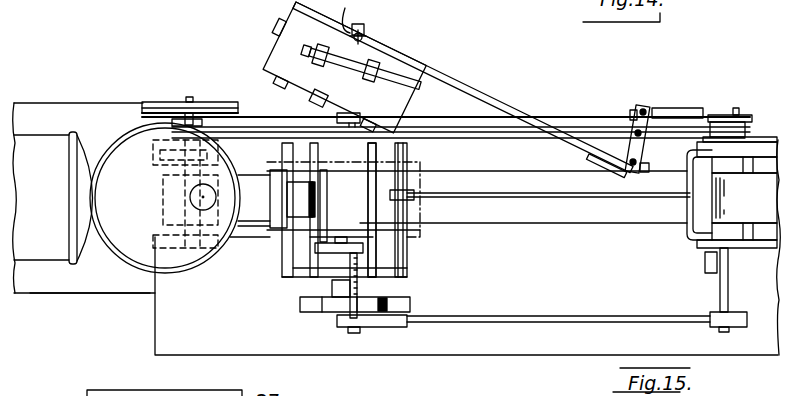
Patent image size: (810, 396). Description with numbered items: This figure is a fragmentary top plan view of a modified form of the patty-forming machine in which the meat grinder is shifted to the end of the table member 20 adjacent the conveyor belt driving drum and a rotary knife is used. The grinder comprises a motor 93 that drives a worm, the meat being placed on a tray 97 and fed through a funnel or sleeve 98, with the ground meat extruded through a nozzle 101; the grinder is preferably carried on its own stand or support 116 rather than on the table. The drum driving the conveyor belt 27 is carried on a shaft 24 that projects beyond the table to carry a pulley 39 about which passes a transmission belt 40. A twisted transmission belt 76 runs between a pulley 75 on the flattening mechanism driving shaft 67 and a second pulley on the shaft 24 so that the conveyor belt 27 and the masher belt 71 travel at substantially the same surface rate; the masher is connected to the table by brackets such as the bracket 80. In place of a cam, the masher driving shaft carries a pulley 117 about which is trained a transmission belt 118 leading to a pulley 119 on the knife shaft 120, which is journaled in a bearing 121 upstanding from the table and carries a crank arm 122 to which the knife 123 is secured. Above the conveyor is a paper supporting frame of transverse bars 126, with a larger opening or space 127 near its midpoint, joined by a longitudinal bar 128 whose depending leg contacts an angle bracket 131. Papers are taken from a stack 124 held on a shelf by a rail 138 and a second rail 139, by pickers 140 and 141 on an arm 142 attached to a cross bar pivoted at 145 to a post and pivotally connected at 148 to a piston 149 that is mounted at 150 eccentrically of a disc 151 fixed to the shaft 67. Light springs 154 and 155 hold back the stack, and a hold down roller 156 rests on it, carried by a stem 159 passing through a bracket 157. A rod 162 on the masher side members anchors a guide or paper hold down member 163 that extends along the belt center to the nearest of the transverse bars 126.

The table member 20 is at (510, 357).
The motor 93 is at (52, 125).
The stand or support 116 is at (68, 288).
The tray 97 is at (122, 148).
The funnel or sleeve 98 is at (192, 203).
The pulley 39 is at (213, 102).
The shaft 24 is at (187, 97).
The transmission belt 40 is at (253, 110).
The transmission belt 76 is at (572, 126).
The arm 142 is at (500, 112).
The rail 138 is at (425, 54).
The stack of papers 124 is at (422, 70).
The second rail 139 is at (272, 28).
The light spring 154 is at (300, 70).
The light spring 155 is at (372, 128).
The picker 140 is at (328, 50).
The picker 141 is at (374, 72).
The bracket 157 is at (364, 28).
The stem 159 is at (380, 34).
The hold down roller 156 is at (347, 0).
The nozzle 101 is at (297, 200).
The transverse bars 126 is at (395, 257).
The longitudinal bar 128 is at (390, 272).
The conveyor belt 27 is at (556, 223).
The opening or space 127 is at (357, 155).
The knife 123 is at (328, 193).
The crank arm 122 is at (348, 243).
The knife shaft 120 is at (363, 296).
The angle bracket 131 is at (334, 293).
The bearing 121 is at (410, 305).
The transmission belt 118 is at (540, 318).
The pulley 119 is at (366, 334).
The guide or paper hold down member 163 is at (488, 198).
The pivot 145 is at (633, 124).
The pivotal connection 148 is at (640, 104).
The piston 149 is at (697, 97).
The eccentric mounting 150 is at (736, 106).
The disc 151 is at (762, 108).
The pulley 75 is at (745, 131).
The masher belt 71 is at (756, 203).
The rod 162 is at (688, 236).
The bracket 80 is at (710, 273).
The shaft 67 is at (730, 282).
The pulley 117 is at (758, 300).